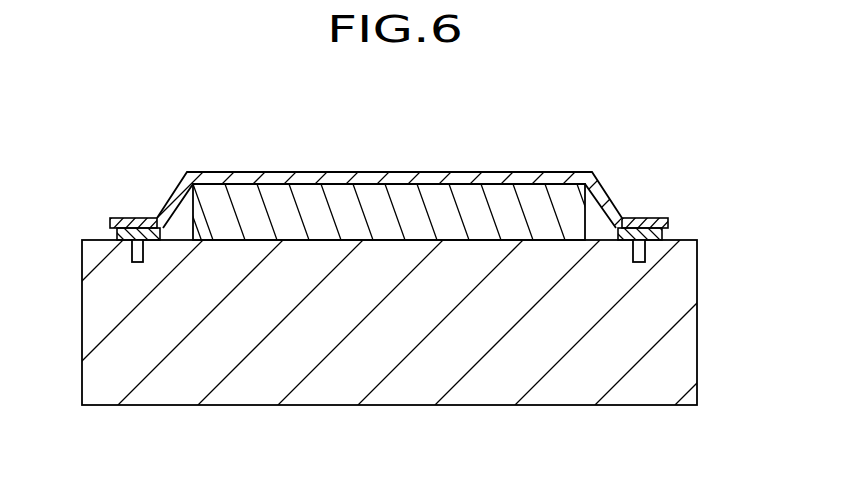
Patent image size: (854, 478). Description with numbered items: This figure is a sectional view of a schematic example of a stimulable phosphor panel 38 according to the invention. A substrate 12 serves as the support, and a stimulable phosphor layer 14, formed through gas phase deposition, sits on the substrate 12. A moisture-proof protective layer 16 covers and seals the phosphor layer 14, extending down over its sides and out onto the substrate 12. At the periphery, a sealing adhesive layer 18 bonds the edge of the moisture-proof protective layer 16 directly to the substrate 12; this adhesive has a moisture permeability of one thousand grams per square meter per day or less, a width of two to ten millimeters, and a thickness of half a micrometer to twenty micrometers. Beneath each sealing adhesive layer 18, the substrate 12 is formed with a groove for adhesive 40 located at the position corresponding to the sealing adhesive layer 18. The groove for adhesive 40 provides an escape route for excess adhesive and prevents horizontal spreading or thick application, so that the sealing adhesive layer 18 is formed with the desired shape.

The substrate 12 is at (690, 327).
The stimulable phosphor layer 14 is at (588, 196).
The moisture-proof protective layer 16 is at (514, 179).
The sealing adhesive layer 18 is at (112, 229).
The piezoelectric device structure 38 is at (585, 122).
The groove for adhesive 40 is at (136, 251).